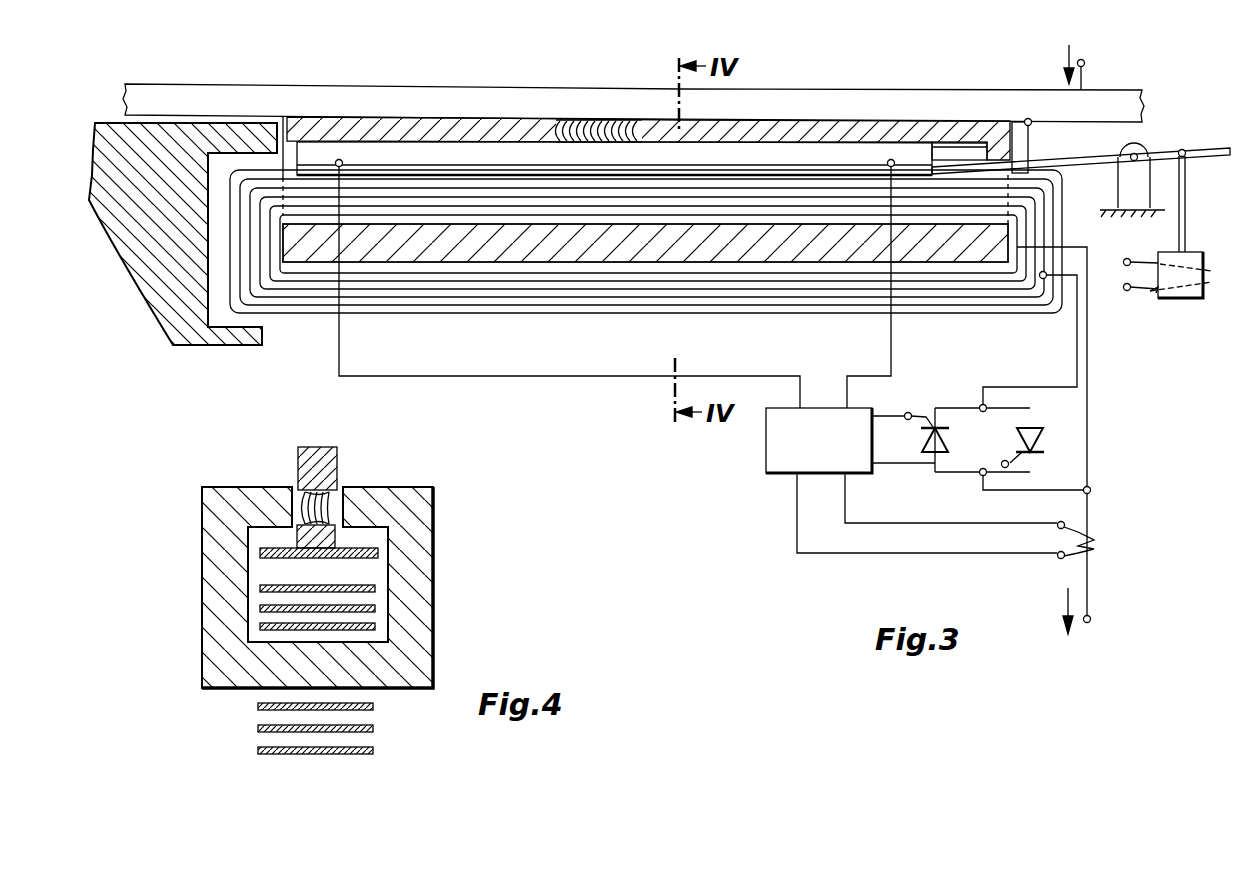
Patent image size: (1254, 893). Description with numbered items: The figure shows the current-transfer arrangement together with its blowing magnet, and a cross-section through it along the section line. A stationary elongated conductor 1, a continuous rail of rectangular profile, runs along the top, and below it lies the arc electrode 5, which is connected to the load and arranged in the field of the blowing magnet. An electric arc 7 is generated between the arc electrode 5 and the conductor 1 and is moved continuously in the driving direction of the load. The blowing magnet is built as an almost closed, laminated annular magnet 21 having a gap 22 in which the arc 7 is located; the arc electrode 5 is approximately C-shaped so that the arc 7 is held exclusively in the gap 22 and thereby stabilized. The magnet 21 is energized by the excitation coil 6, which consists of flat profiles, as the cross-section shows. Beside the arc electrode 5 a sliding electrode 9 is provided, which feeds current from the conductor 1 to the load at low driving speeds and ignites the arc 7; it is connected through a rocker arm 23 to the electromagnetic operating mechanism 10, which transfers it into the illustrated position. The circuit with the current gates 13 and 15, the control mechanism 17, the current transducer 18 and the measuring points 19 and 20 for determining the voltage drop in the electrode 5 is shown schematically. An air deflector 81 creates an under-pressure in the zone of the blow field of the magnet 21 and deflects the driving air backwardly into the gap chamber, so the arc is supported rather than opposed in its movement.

In FIG. 4, the stationary elongated conductor 1 is at (312, 447).
In FIG. 3, the arc electrode 5 is at (776, 157).
In FIG. 4, the arc electrode 5 is at (263, 553).
In FIG. 3, the excitation coil 6 is at (826, 303).
In FIG. 4, the excitation coil 6 is at (262, 588).
In FIG. 3, the electric arc 7 is at (580, 118).
In FIG. 4, the electric arc 7 is at (306, 492).
In FIG. 3, the sliding electrode 9 is at (962, 150).
In FIG. 3, the electromagnetic operating mechanism 10 is at (1146, 292).
In FIG. 3, the current gate 13 is at (921, 447).
In FIG. 3, the current gate 15 is at (1041, 437).
In FIG. 3, the control mechanism 17 is at (782, 465).
In FIG. 3, the current transducer 18 is at (1084, 536).
In FIG. 3, the measuring point 19 is at (340, 158).
In FIG. 3, the measuring point 20 is at (889, 158).
In FIG. 4, the annular magnet 21 is at (415, 592).
In FIG. 4, the gap 22 is at (342, 504).
In FIG. 3, the rocker arm 23 is at (1090, 160).
In FIG. 3, the air deflector 81 is at (173, 268).